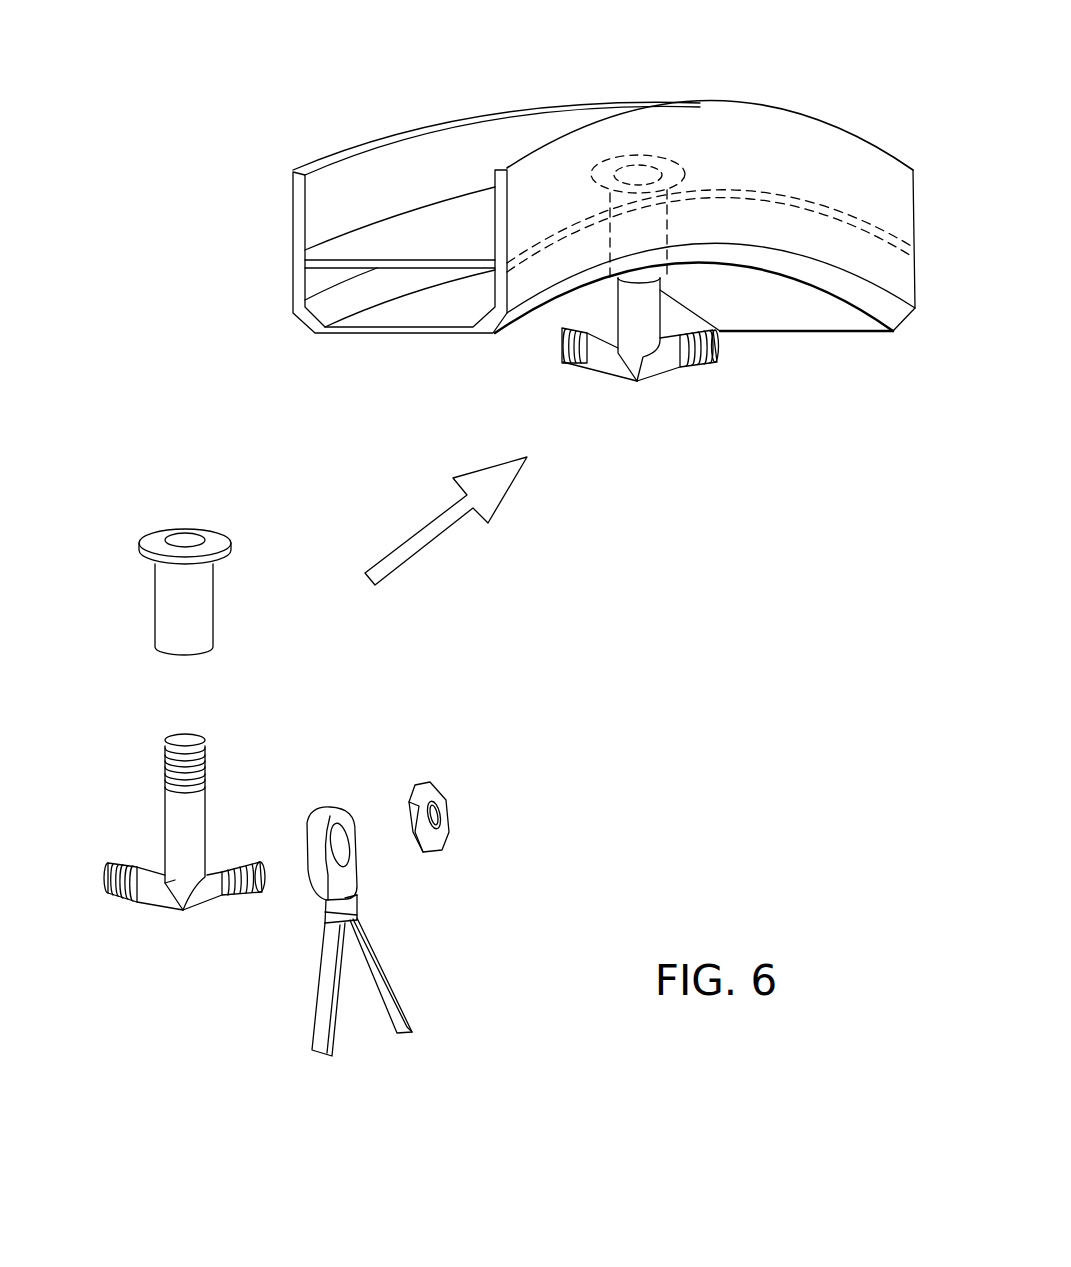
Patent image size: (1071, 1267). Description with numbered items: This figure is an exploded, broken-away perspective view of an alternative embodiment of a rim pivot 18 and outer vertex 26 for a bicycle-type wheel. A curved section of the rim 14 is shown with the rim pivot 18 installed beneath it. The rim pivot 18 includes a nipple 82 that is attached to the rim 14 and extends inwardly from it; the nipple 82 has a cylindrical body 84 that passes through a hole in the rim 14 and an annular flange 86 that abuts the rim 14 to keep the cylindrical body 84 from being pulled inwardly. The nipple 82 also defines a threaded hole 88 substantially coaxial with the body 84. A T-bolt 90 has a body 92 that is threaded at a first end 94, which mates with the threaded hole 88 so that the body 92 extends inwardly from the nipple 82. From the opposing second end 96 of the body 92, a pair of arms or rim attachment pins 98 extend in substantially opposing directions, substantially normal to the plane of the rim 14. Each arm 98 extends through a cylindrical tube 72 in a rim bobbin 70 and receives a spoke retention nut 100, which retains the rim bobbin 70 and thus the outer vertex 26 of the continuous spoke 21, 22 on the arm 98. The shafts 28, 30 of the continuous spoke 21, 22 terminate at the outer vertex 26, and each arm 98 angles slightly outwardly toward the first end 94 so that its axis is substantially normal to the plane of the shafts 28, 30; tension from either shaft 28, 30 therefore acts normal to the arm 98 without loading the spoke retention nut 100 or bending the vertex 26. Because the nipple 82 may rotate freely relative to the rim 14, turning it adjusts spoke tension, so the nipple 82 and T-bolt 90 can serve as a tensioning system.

The rim 14 is at (712, 100).
The rim pivot 18 is at (723, 457).
The nipple 82 is at (190, 560).
The cylindrical body 84 is at (192, 630).
The annular flange 86 is at (140, 549).
The threaded hole 88 is at (183, 542).
The T-bolt 90 is at (175, 875).
The body 92 is at (183, 820).
The first end 94 is at (197, 758).
The second end 96 is at (175, 880).
The arms or rim attachment pins 98 is at (148, 892).
The spoke retention nut 100 is at (428, 784).
The rim bobbin 70 is at (385, 932).
The cylindrical tube 72 is at (335, 830).
The outer vertex 26 is at (357, 893).
The continuous spoke 21 is at (385, 1020).
The continuous spoke 22 is at (385, 1020).
The shaft 28 is at (393, 1017).
The shaft 30 is at (322, 1030).